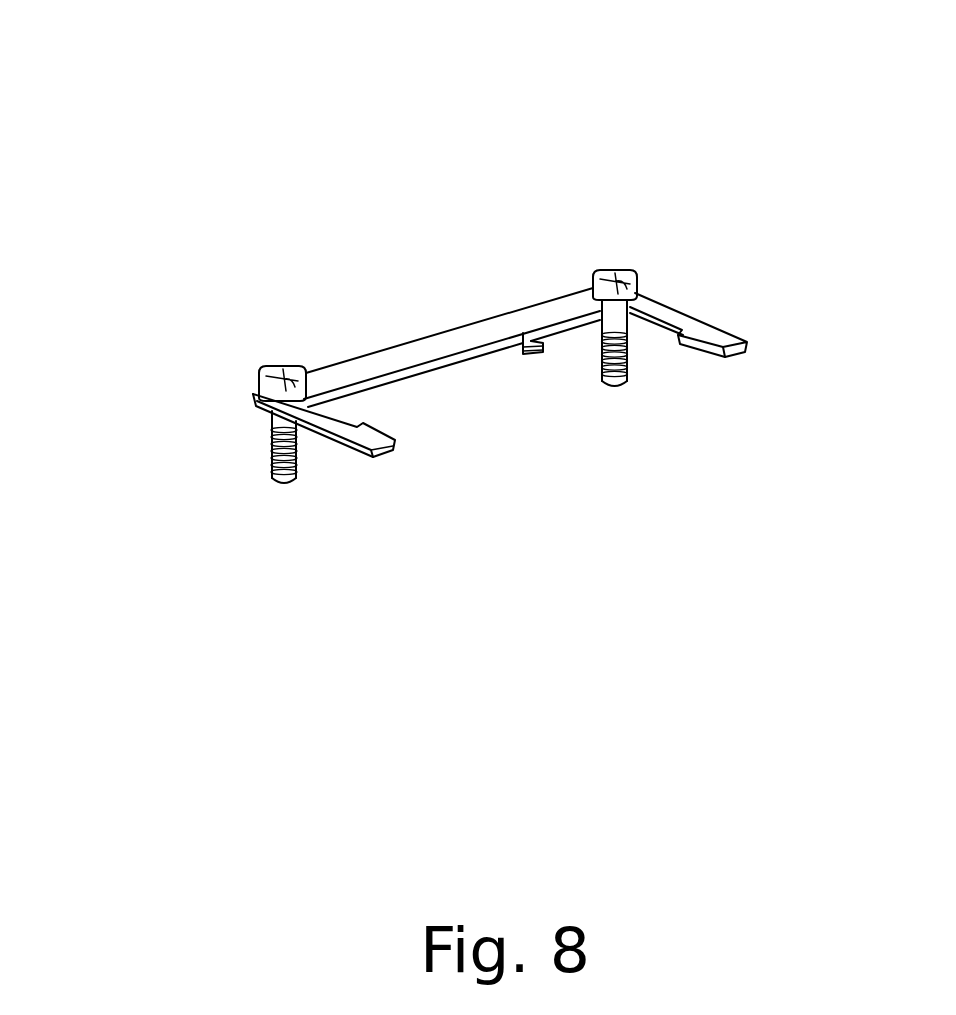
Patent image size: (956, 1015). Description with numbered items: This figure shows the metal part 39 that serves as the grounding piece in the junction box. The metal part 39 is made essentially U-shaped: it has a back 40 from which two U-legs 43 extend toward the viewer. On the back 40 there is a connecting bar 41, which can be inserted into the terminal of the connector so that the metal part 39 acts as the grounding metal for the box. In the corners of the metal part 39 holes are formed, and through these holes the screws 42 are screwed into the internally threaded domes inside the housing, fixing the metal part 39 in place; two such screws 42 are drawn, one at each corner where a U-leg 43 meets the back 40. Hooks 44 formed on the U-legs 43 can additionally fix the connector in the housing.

The metal part 39 is at (441, 228).
The back 40 is at (428, 352).
The connecting bar 41 is at (524, 335).
The screws 42 is at (278, 366).
The U-legs 43 is at (270, 477).
The hooks 44 is at (375, 433).